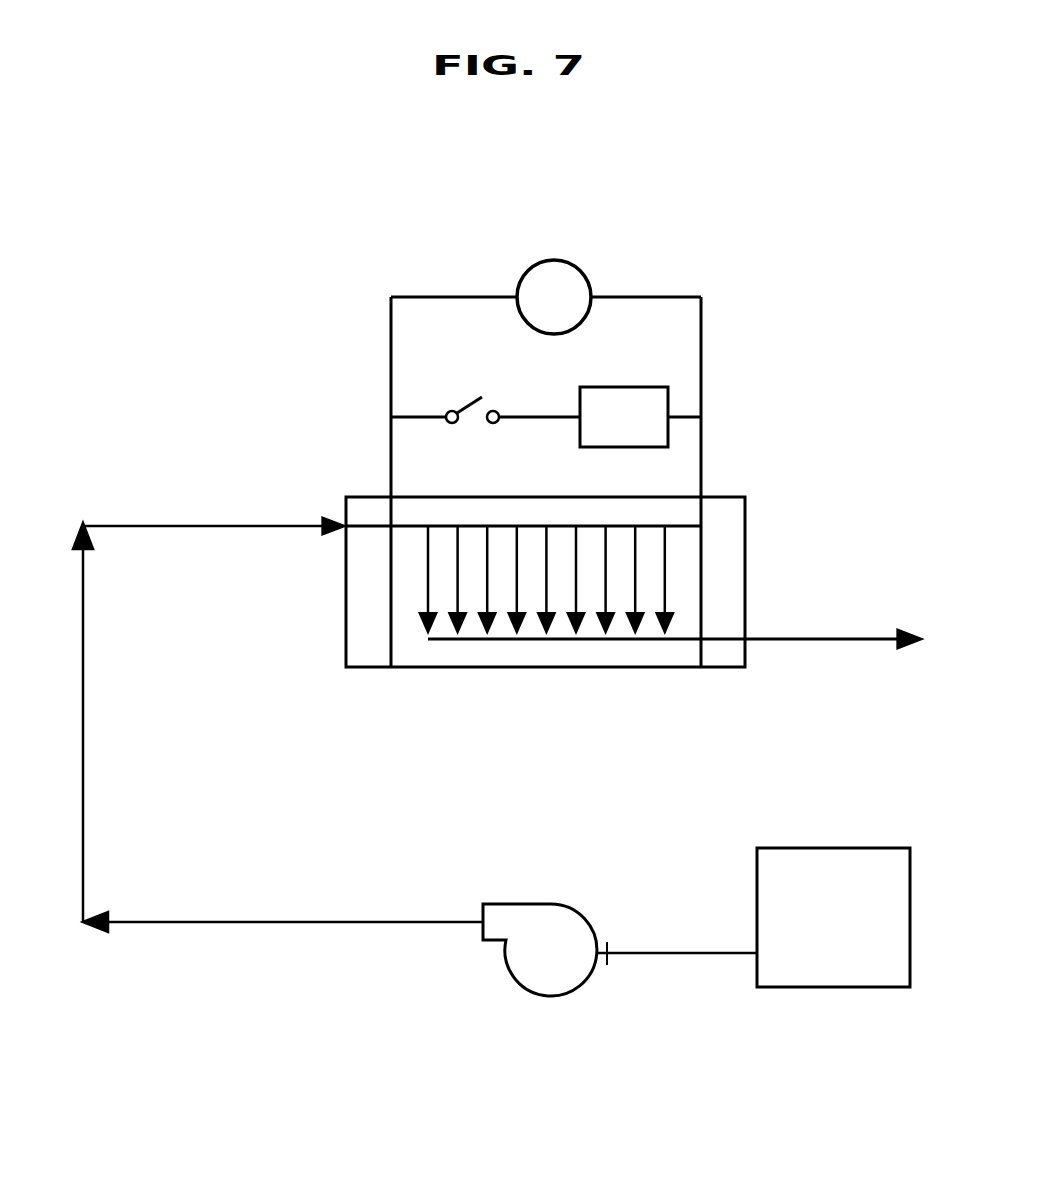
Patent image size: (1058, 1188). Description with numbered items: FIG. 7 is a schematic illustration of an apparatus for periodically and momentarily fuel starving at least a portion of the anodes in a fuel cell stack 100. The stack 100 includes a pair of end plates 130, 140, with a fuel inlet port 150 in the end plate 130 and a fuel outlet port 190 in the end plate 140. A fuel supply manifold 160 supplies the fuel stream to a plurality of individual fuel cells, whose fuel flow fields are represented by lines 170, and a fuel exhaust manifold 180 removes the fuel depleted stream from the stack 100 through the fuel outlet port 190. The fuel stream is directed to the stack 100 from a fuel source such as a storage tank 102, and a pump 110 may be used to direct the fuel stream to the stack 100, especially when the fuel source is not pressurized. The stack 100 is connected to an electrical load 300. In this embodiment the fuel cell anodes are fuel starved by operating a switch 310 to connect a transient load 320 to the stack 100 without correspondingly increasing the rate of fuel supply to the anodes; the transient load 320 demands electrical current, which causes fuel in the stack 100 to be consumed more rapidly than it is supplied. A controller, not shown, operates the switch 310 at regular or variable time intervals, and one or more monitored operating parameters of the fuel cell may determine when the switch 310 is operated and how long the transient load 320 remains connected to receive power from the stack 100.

The fuel cell stack 100 is at (777, 557).
The storage tank 102 is at (782, 863).
The pump 110 is at (543, 905).
The end plate 130 is at (373, 503).
The end plate 140 is at (722, 523).
The fuel inlet port 150 is at (353, 523).
The fuel supply manifold 160 is at (437, 520).
The fuel flow fields 170 is at (542, 590).
The fuel exhaust manifold 180 is at (553, 640).
The fuel outlet port 190 is at (717, 640).
The electrical load 300 is at (550, 287).
The switch 310 is at (467, 403).
The transient load 320 is at (642, 403).